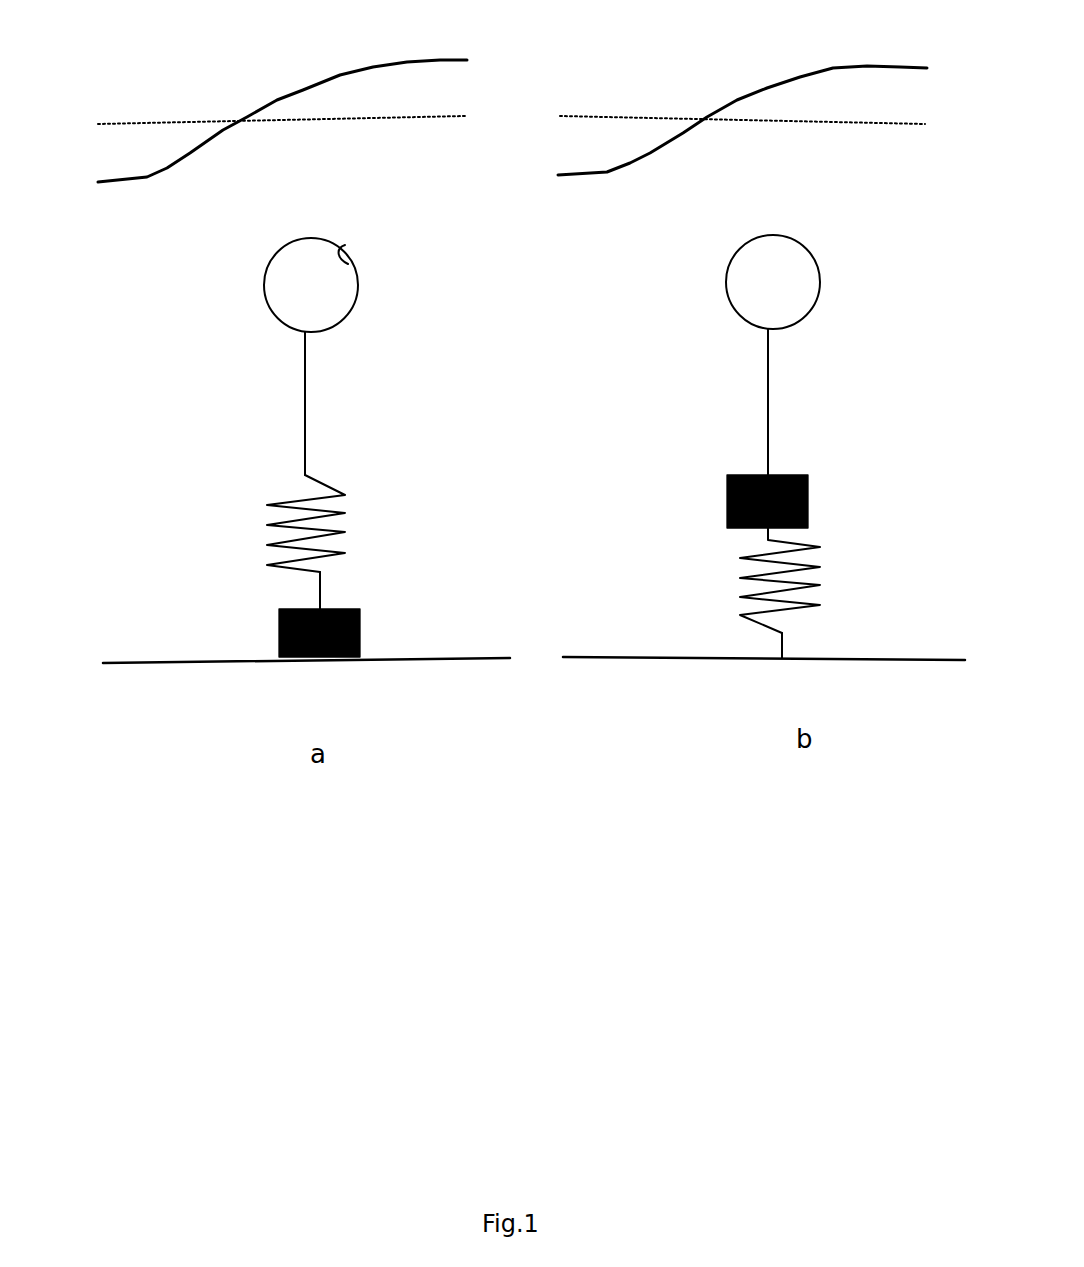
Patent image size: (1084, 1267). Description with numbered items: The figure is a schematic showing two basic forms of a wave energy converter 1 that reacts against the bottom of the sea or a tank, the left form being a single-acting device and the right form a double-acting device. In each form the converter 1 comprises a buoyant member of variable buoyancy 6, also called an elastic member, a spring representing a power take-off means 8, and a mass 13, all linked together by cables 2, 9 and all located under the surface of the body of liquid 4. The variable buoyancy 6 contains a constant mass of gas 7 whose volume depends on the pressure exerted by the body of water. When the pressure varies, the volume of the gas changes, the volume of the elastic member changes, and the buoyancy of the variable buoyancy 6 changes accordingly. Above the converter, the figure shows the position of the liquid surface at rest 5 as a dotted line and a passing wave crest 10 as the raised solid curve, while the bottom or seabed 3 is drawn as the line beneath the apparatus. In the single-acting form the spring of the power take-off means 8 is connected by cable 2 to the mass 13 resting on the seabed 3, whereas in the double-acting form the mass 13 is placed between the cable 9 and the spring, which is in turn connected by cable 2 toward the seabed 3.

The wave energy converter 1 is at (176, 482).
The cable 2 is at (320, 590).
The seabed 3 is at (437, 657).
The body of liquid 4 is at (155, 365).
The liquid surface at rest 5 is at (390, 118).
The variable buoyancy 6 is at (362, 288).
The constant mass of gas 7 is at (348, 264).
The power take-off means 8 is at (374, 523).
The cable 9 is at (308, 400).
The passing wave crest 10 is at (447, 58).
The mass 13 is at (362, 617).